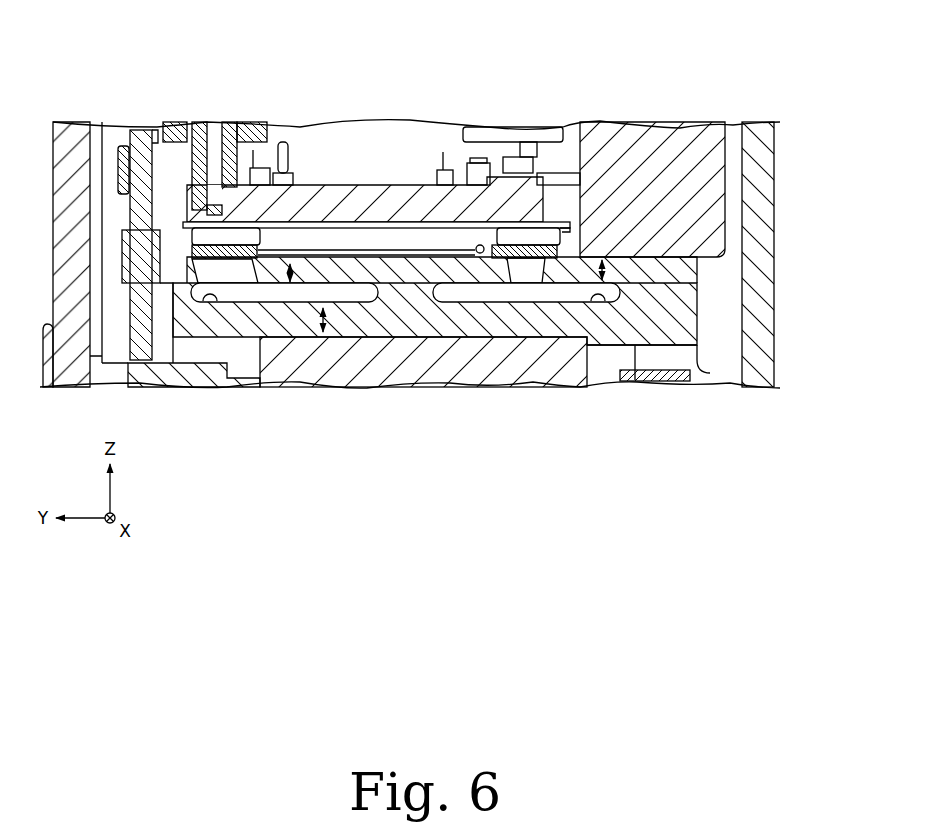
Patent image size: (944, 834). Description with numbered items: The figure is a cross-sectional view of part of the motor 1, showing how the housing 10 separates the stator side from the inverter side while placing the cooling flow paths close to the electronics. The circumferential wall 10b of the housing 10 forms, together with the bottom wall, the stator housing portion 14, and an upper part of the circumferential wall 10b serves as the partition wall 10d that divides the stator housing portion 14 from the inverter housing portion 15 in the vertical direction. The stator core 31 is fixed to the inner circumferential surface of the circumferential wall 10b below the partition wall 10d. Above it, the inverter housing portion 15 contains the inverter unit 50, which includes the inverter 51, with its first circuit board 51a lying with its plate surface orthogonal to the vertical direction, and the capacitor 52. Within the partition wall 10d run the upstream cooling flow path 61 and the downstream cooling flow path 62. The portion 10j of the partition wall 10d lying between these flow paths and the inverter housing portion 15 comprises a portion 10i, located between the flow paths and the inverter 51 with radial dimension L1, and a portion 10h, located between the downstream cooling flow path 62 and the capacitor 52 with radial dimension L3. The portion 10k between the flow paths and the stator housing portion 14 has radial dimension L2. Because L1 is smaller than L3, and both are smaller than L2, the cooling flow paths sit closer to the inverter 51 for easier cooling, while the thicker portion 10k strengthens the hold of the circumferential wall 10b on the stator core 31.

The motor 1 is at (717, 72).
The housing 10 is at (453, 295).
The circumferential wall 10b is at (713, 403).
The partition wall 10d is at (521, 342).
The portion 10h is at (445, 272).
The portion 10i is at (398, 262).
The portion 10j is at (442, 355).
The portion 10k is at (410, 283).
The stator housing portion 14 is at (660, 373).
The inverter housing portion 15 is at (337, 148).
The stator core 31 is at (280, 357).
The inverter unit 50 is at (630, 72).
The inverter 51 is at (372, 143).
The first circuit board 51a is at (373, 186).
The capacitor 52 is at (640, 162).
The upstream cooling flow path 61 is at (209, 300).
The downstream cooling flow path 62 is at (600, 301).
The radial dimension L1 is at (291, 286).
The radial dimension L2 is at (323, 335).
The radial dimension L3 is at (664, 357).